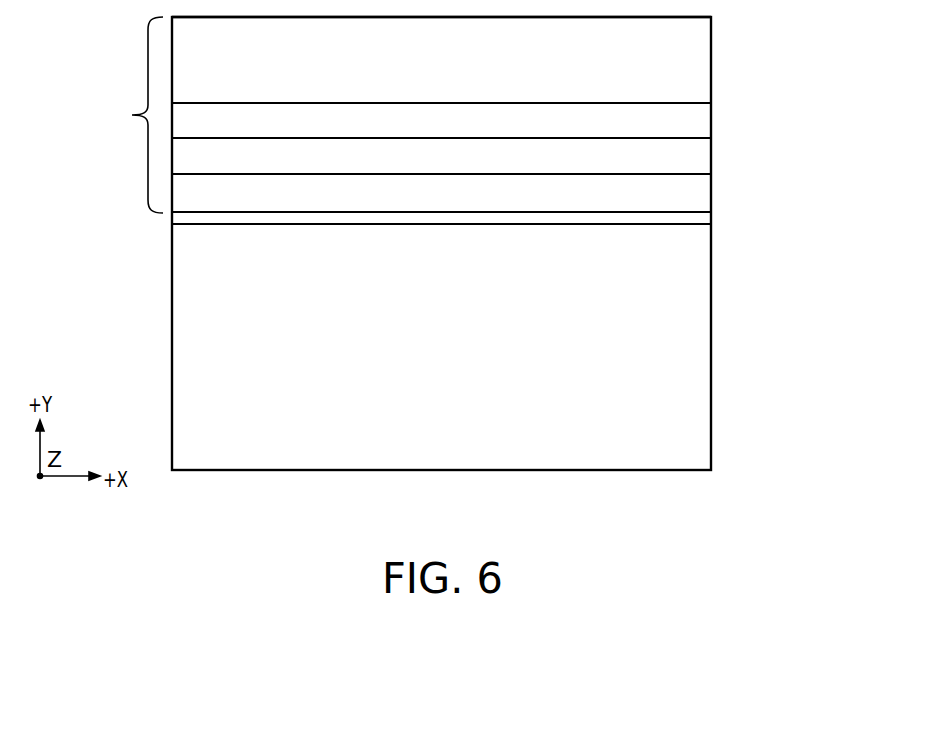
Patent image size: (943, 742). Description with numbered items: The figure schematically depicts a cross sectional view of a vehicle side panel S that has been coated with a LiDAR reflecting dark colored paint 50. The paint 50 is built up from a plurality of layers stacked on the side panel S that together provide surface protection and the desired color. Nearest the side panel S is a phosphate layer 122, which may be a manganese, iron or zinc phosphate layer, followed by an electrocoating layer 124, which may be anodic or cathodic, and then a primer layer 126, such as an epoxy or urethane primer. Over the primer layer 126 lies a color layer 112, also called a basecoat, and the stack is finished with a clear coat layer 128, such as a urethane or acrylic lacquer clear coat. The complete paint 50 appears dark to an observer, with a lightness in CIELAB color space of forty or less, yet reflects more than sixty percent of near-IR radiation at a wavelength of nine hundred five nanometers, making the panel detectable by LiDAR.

The side panel S is at (698, 348).
The LiDAR reflecting dark colored paint 50 is at (127, 115).
The phosphate layer 122 is at (711, 218).
The electrocoating layer 124 is at (711, 192).
The primer layer 126 is at (711, 155).
The color layer 112 is at (711, 122).
The clear coat layer 128 is at (711, 57).